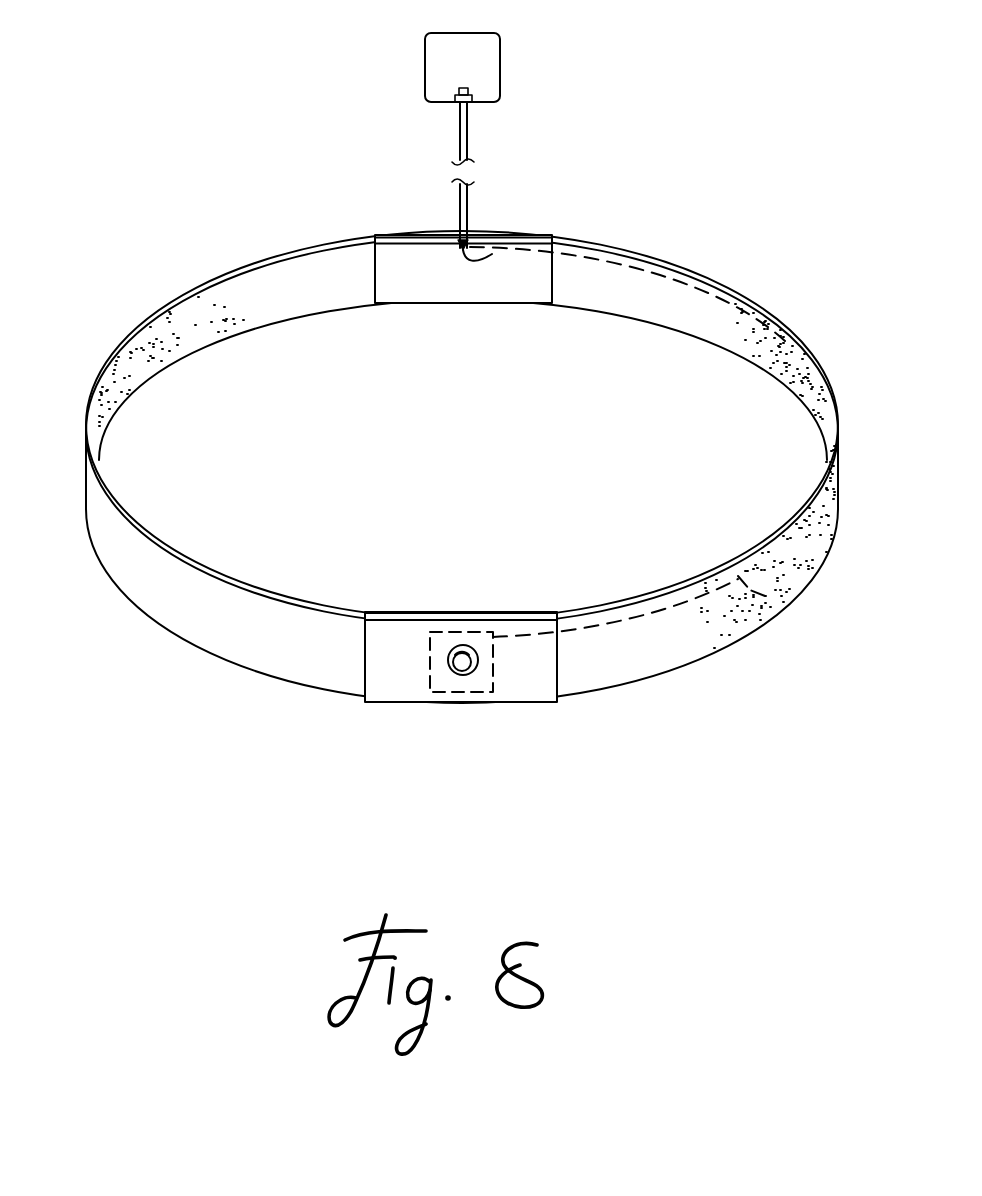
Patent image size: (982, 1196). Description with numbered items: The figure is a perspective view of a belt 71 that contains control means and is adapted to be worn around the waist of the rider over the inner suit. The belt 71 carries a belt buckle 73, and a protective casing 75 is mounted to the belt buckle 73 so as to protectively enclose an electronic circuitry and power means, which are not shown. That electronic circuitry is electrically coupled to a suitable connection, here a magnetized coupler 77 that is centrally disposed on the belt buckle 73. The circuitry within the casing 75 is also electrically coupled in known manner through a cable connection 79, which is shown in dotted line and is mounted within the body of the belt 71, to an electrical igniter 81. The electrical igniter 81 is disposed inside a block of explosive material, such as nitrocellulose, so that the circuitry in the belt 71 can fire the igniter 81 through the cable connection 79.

The belt 71 is at (148, 638).
The belt buckle 73 is at (383, 705).
The protective casing 75 is at (495, 665).
The magnetized coupler 77 is at (465, 668).
The cable connection 79 is at (785, 602).
The electrical igniter 81 is at (483, 70).